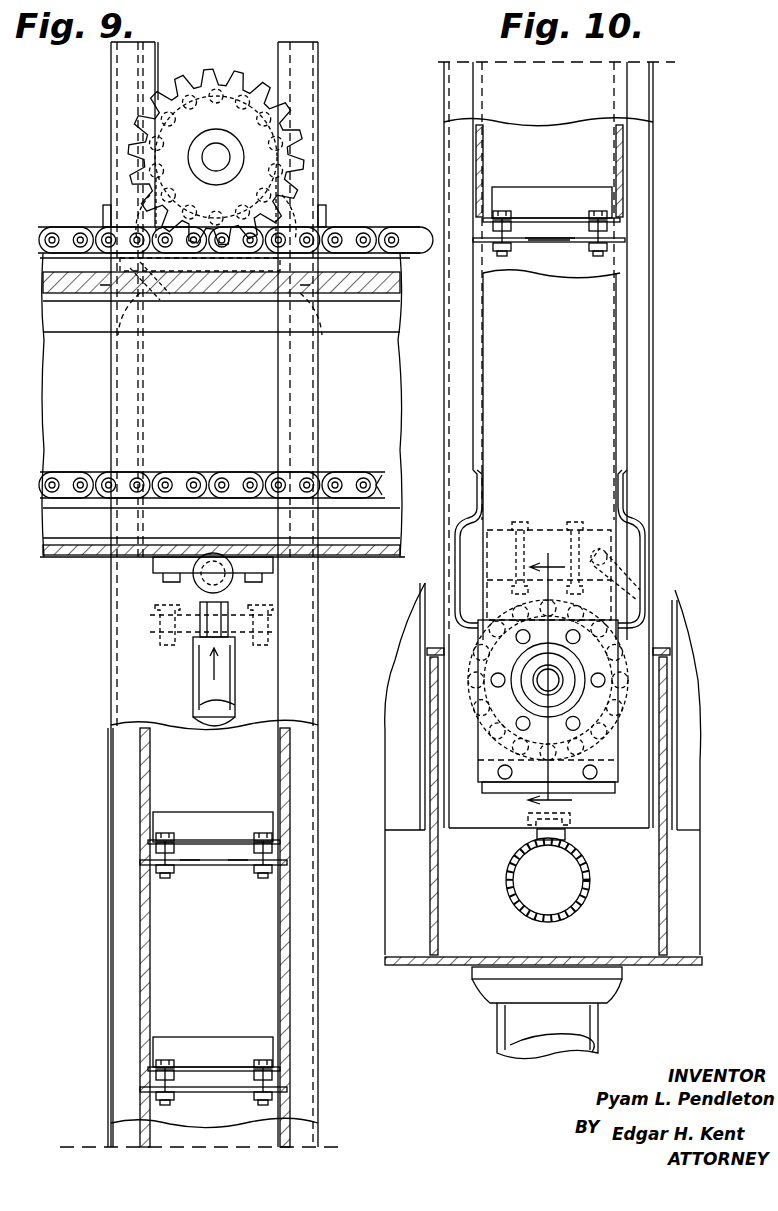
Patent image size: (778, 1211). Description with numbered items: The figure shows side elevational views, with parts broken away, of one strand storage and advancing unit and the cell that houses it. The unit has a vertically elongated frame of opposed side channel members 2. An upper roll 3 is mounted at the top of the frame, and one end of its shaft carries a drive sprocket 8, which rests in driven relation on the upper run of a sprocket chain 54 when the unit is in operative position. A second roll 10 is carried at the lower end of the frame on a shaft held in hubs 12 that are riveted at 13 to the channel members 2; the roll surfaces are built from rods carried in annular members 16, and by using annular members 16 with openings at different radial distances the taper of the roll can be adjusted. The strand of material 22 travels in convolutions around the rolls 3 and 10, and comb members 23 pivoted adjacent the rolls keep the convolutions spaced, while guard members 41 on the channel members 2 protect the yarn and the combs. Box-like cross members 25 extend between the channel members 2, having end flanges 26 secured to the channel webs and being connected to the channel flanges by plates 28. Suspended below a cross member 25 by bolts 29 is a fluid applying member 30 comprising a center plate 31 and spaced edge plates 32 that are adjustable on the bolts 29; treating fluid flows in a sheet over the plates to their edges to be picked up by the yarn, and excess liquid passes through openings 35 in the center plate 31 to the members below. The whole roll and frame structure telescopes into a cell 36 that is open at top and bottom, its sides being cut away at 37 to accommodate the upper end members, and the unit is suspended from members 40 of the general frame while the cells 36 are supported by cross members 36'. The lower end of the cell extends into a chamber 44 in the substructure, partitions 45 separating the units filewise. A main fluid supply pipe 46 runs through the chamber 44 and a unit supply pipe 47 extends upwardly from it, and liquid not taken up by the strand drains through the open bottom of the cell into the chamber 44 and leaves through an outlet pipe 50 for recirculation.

In FIG. 10, the side channel member 2 is at (590, 352).
In FIG. 9, the roll 3 is at (244, 80).
In FIG. 9, the drive sprocket 8 is at (197, 62).
In FIG. 10, the second roll 10 is at (455, 686).
In FIG. 10, the hub 12 is at (565, 675).
In FIG. 10, the rivets 13 is at (592, 722).
In FIG. 10, the annular member 16 is at (475, 720).
In FIG. 10, the strand of material 22 is at (640, 428).
In FIG. 9, the comb member 23 is at (118, 263).
In FIG. 10, the comb member 23 is at (610, 558).
In FIG. 9, the cross member 25 is at (243, 643).
In FIG. 10, the cross member 25 is at (575, 216).
In FIG. 9, the end flange 26 is at (150, 600).
In FIG. 10, the end flange 26 is at (528, 187).
In FIG. 9, the plate 28 is at (140, 790).
In FIG. 10, the plate 28 is at (549, 171).
In FIG. 9, the bolt 29 is at (165, 882).
In FIG. 10, the fluid applying member 30 is at (527, 262).
In FIG. 9, the center plate 31 is at (188, 643).
In FIG. 10, the center plate 31 is at (565, 242).
In FIG. 9, the edge plate 32 is at (150, 627).
In FIG. 10, the edge plate 32 is at (580, 238).
In FIG. 10, the opening 35 is at (548, 250).
In FIG. 9, the cell 36 is at (222, 594).
In FIG. 10, the cell 36 is at (547, 508).
In FIG. 9, the cross member 36' is at (222, 185).
In FIG. 9, the cut away 37 is at (162, 60).
In FIG. 9, the member of the general frame 40 is at (388, 296).
In FIG. 9, the guard member 41 is at (118, 345).
In FIG. 10, the guard member 41 is at (640, 517).
In FIG. 10, the chamber 44 is at (465, 949).
In FIG. 10, the partition 45 is at (655, 913).
In FIG. 10, the main fluid supply pipe 46 is at (585, 883).
In FIG. 10, the unit supply pipe 47 is at (565, 836).
In FIG. 10, the outlet pipe 50 is at (525, 1030).
In FIG. 9, the sprocket chain 54 is at (377, 228).